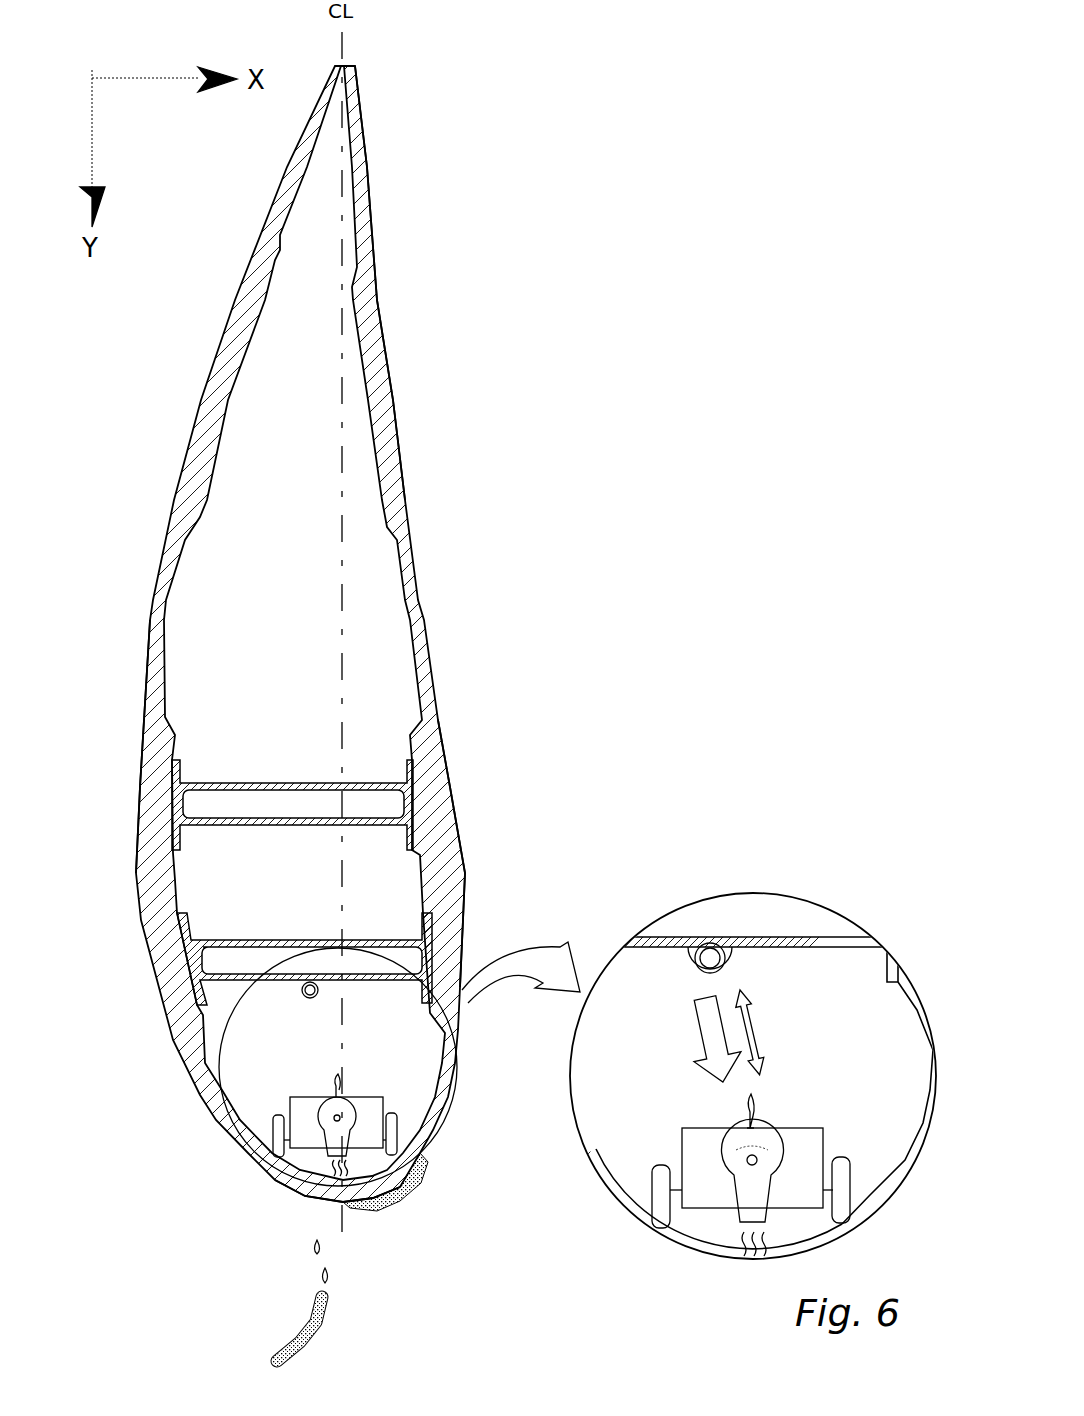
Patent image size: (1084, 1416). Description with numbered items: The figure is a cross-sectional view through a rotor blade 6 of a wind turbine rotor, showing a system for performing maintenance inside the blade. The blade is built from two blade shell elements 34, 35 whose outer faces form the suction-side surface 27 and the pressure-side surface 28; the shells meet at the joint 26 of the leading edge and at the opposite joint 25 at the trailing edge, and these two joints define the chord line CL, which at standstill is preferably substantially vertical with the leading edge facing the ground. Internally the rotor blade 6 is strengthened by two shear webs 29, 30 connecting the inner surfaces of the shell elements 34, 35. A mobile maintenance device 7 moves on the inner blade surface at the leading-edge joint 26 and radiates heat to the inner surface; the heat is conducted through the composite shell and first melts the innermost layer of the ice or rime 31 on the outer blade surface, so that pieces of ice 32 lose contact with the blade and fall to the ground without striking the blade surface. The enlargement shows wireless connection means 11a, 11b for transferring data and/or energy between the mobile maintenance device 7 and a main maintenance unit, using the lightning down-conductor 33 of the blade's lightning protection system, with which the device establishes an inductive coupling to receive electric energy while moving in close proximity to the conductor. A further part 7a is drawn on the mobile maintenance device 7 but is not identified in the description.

The rotor blade 6 is at (540, 578).
The mobile maintenance device 7 is at (680, 1150).
The light source mounting 7a is at (828, 1160).
The wireless connection means 11a is at (762, 1048).
The wireless connection means 11b is at (700, 1052).
The joint at the trailing edge 25 is at (360, 68).
The joint of the leading edge 26 is at (343, 1203).
The suction-side surface 27 is at (212, 377).
The pressure-side surface 28 is at (387, 377).
The shear web 29 is at (232, 782).
The shear web 30 is at (232, 937).
The ice or rime 31 is at (400, 1196).
The pieces of ice 32 is at (312, 1333).
The lightning down-conductor 33 is at (708, 945).
The blade shell element 34 is at (148, 875).
The blade shell element 35 is at (452, 883).